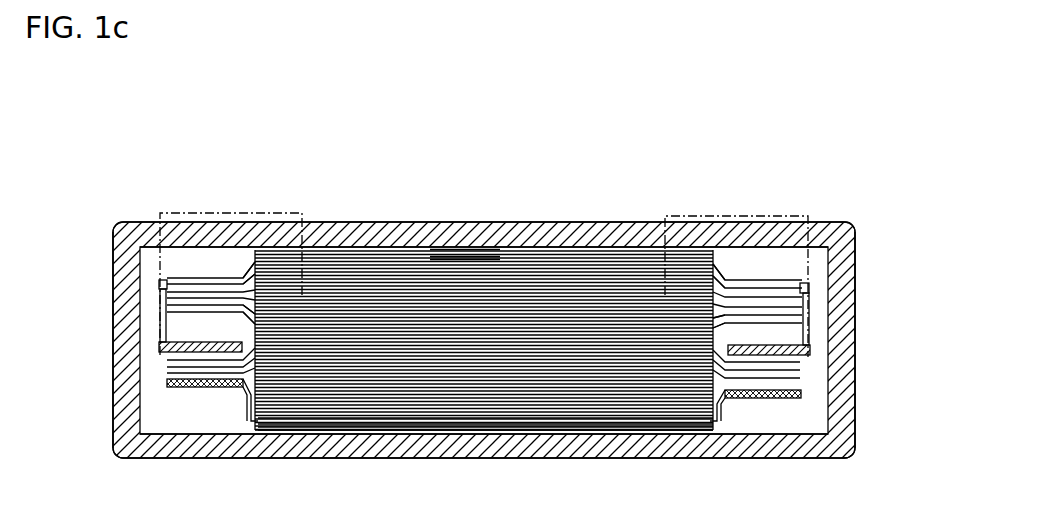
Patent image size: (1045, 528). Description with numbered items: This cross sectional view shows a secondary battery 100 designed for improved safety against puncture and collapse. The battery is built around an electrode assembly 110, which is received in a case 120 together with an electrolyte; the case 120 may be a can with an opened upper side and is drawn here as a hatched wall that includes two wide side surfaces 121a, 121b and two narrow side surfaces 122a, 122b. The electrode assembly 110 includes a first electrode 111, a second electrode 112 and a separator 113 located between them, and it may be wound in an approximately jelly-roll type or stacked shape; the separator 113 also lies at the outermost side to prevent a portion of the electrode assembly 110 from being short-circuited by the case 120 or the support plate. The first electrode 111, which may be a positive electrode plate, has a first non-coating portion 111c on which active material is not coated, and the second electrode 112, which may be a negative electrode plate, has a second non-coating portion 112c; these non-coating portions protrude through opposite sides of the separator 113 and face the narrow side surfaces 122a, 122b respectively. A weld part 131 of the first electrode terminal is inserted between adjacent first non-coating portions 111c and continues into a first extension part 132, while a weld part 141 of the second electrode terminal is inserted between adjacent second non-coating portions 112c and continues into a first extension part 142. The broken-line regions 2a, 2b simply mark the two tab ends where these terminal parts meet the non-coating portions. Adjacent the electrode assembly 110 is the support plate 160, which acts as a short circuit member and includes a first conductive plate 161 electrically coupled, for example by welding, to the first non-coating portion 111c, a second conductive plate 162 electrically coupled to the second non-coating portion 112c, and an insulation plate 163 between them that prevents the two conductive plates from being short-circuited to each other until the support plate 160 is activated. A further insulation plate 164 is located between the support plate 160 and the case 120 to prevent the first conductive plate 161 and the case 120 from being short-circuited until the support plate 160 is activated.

The secondary battery 100 is at (761, 128).
The electrode assembly 110 is at (554, 246).
The first electrode 111 is at (756, 272).
The first non-coating portion 111c is at (790, 276).
The second electrode 112 is at (216, 270).
The second non-coating portion 112c is at (186, 276).
The separator 113 is at (490, 258).
The case 120 is at (621, 221).
The wide side surface 121a is at (388, 447).
The wide side surface 121b is at (373, 252).
The narrow side surface 122a is at (121, 259).
The narrow side surface 122b is at (849, 266).
The weld part 131 is at (810, 340).
The first extension part 132 is at (809, 304).
The weld part 141 is at (160, 337).
The first extension part 142 is at (159, 302).
The support plate 160 is at (531, 430).
The first conductive plate 161 is at (727, 411).
The second conductive plate 162 is at (240, 410).
The insulation plate 163 is at (318, 421).
The insulation plate 164 is at (460, 432).
The first tab region 2a is at (705, 216).
The second tab region 2b is at (266, 213).